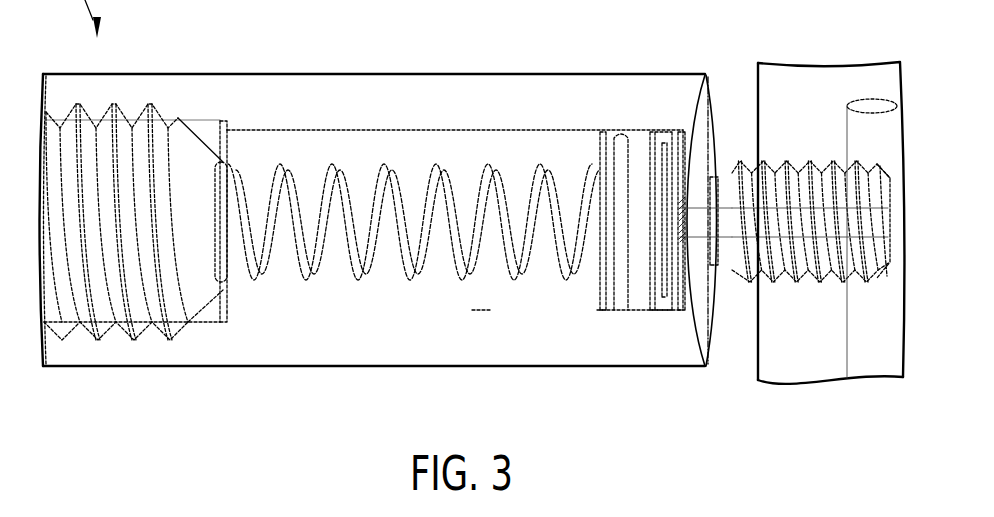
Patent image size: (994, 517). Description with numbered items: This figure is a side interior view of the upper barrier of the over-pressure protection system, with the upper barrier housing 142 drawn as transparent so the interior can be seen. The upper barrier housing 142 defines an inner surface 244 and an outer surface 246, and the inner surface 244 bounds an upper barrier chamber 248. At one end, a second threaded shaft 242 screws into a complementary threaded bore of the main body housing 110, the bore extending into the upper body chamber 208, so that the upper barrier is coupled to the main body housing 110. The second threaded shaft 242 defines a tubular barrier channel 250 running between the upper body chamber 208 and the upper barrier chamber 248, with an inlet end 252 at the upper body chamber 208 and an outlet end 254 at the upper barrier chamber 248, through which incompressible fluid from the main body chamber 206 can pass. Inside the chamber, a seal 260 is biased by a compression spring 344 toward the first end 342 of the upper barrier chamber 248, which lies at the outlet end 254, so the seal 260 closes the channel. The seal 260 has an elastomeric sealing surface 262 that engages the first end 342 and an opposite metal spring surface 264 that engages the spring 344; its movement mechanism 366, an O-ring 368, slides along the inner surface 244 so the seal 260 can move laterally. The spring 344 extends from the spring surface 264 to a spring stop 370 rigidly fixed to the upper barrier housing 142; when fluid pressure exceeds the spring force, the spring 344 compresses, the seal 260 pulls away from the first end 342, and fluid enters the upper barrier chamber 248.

The main body housing 110 is at (834, 226).
The upper barrier housing 142 is at (213, 91).
The main body chamber 206 is at (879, 347).
The upper body chamber 208 is at (877, 125).
The second threaded shaft 242 is at (831, 200).
The inner surface 244 is at (275, 311).
The outer surface 246 is at (222, 370).
The upper barrier chamber 248 is at (407, 216).
The tubular barrier channel 250 is at (715, 216).
The inlet end 252 is at (889, 228).
The outlet end 254 is at (686, 236).
The seal 260 is at (639, 245).
The sealing surface 262 is at (672, 152).
The spring surface 264 is at (607, 155).
The first end 342 is at (706, 76).
The spring 344 is at (463, 273).
The movement mechanism 366 is at (647, 150).
The O-ring 368 is at (643, 307).
The spring stop 370 is at (197, 293).